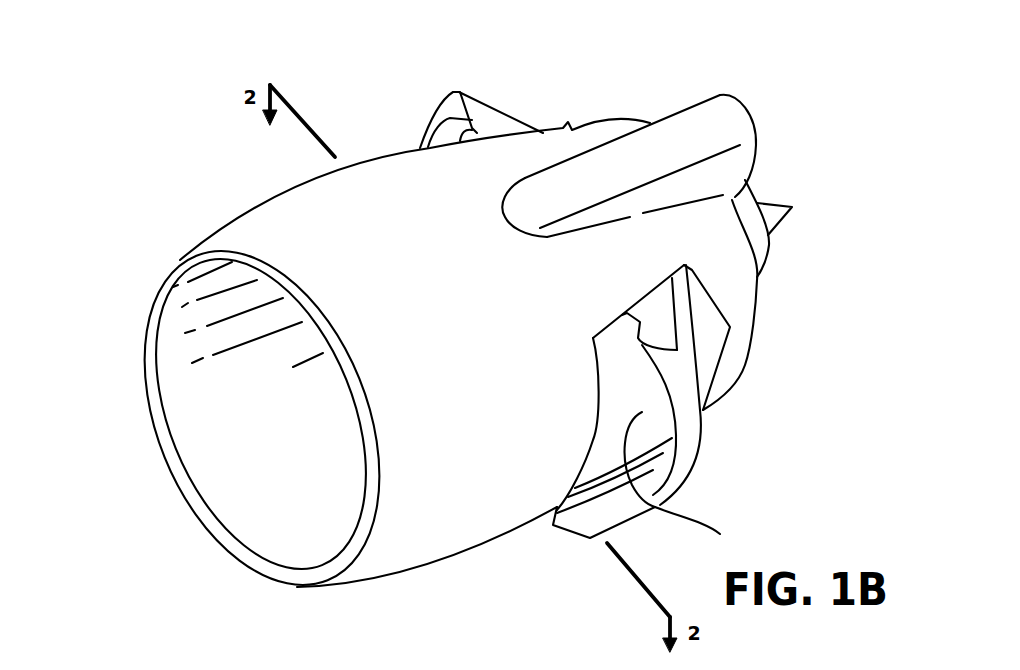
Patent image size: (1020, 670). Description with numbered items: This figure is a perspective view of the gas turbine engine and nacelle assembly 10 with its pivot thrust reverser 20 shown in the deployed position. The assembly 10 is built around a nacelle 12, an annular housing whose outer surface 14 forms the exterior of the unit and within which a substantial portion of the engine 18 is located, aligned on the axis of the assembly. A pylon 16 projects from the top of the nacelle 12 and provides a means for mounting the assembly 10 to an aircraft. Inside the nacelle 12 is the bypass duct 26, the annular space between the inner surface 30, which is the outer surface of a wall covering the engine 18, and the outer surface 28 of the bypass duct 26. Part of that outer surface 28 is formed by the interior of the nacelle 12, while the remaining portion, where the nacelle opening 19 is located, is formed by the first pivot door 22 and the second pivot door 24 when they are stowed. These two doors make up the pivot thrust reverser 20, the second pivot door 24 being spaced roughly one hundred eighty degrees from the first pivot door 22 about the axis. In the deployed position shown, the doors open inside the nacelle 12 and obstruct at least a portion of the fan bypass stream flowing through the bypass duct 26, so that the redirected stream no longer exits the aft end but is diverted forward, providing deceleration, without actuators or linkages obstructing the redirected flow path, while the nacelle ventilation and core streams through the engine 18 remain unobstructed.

The gas turbine engine and nacelle assembly 10 is at (142, 202).
The nacelle 12 is at (320, 200).
The outer surface of nacelle 14 is at (400, 533).
The pylon 16 is at (680, 132).
The engine 18 is at (795, 256).
The nacelle opening 19 is at (608, 323).
The pivot thrust reverser 20 is at (728, 455).
The first pivot door 22 is at (687, 348).
The second pivot door 24 is at (463, 103).
The bypass duct 26 is at (608, 357).
The outer surface of bypass duct 28 is at (477, 102).
The inner surface of bypass duct 30 is at (703, 300).